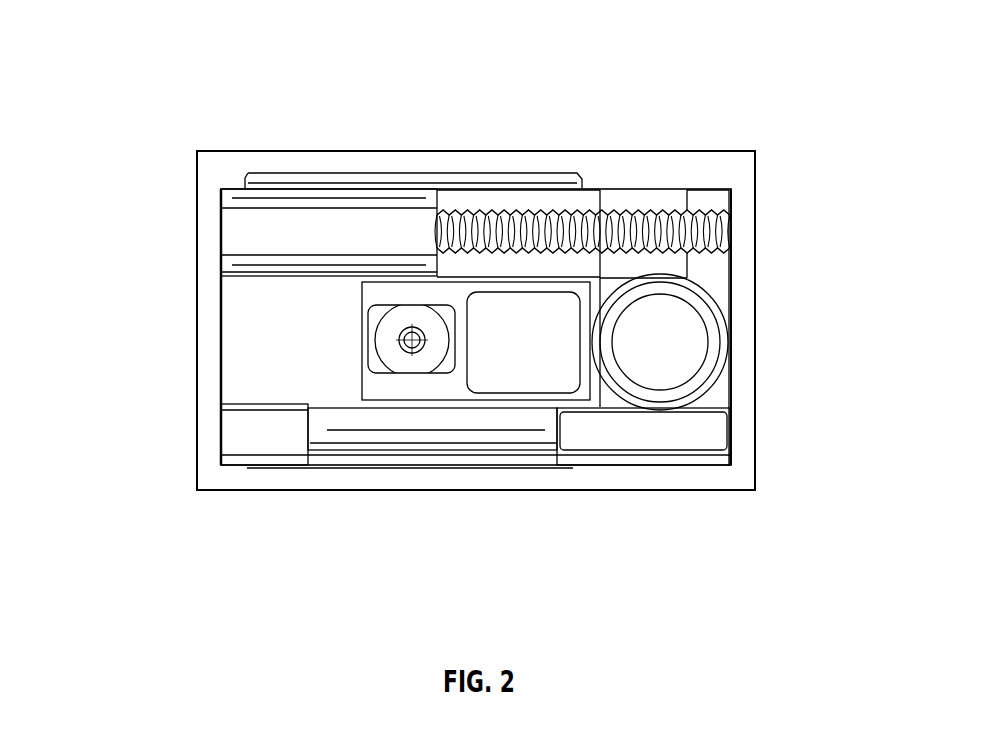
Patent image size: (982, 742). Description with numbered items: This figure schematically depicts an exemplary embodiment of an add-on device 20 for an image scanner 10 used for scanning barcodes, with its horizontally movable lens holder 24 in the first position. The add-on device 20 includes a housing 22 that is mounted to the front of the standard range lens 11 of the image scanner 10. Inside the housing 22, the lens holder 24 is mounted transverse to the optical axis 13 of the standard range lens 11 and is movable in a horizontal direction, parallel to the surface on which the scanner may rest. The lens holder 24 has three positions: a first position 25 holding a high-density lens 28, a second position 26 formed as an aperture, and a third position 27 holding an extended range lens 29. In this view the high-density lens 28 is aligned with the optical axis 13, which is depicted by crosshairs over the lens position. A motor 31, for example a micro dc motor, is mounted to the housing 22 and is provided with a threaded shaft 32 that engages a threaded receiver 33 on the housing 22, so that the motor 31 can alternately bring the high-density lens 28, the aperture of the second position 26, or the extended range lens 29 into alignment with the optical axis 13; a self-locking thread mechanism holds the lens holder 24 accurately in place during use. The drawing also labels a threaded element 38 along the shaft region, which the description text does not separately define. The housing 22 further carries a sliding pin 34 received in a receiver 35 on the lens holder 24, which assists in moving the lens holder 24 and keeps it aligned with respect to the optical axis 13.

The image scanner 10 is at (444, 165).
The standard range lens 11 is at (425, 316).
The optical axis 13 is at (393, 338).
The add-on device 20 is at (820, 317).
The housing 22 is at (220, 360).
The lens holder 24 is at (737, 388).
The first position 25 is at (403, 387).
The second position 26 is at (553, 380).
The third position 27 is at (703, 395).
The high-density lens 28 is at (362, 363).
The extended range lens 29 is at (665, 363).
The motor 31 is at (220, 222).
The threaded shaft 32 is at (628, 216).
The threaded receiver 33 is at (732, 220).
The sliding pin 34 is at (465, 437).
The receiver 35 is at (705, 437).
The lead screw 38 is at (578, 218).